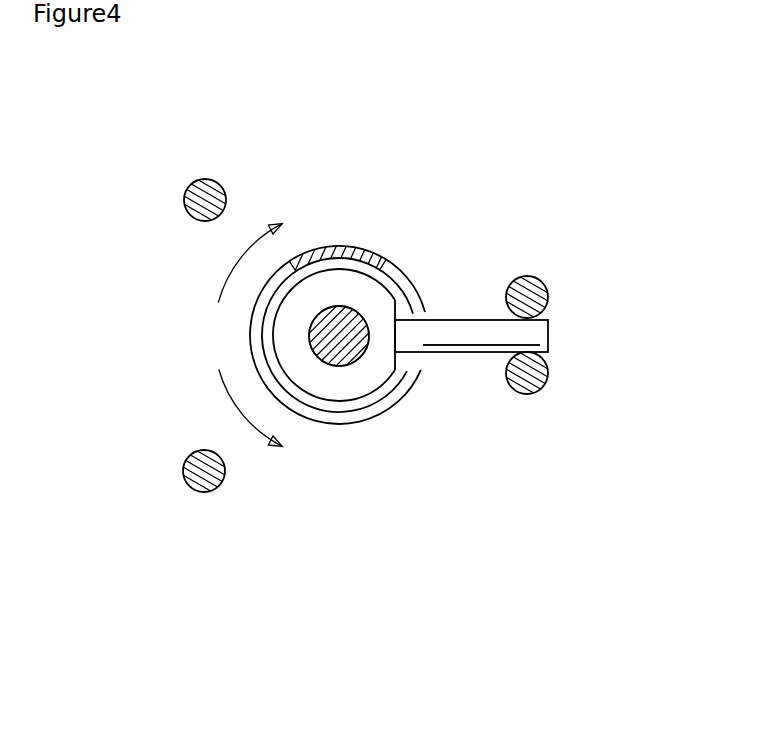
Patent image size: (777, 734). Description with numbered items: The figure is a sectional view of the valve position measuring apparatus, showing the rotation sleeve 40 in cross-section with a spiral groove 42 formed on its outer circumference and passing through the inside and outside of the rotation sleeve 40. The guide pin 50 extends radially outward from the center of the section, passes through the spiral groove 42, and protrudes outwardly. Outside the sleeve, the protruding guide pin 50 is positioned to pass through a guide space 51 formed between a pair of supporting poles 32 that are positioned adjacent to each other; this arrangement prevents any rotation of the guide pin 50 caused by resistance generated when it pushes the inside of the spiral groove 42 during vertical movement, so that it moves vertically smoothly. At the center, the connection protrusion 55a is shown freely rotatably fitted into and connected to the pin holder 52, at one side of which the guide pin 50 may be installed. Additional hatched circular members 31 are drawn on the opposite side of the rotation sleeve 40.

The first roller 31 is at (186, 195).
The supporting pole 32 is at (530, 290).
The rotation sleeve 40 is at (342, 250).
The spiral groove 42 is at (396, 403).
The guide pin 50 is at (463, 332).
The guide space 51 is at (545, 317).
The pin holder 52 is at (342, 377).
The connection protrusion 55a is at (330, 336).